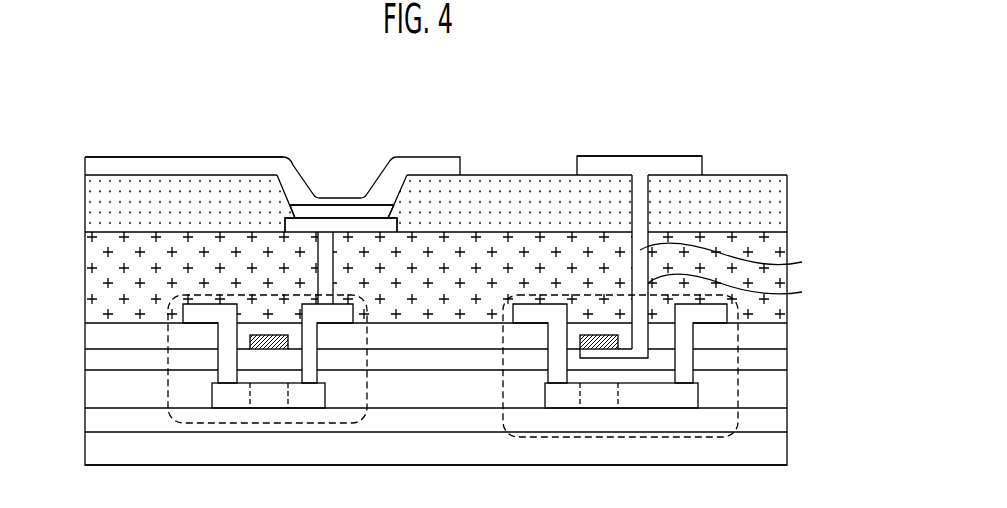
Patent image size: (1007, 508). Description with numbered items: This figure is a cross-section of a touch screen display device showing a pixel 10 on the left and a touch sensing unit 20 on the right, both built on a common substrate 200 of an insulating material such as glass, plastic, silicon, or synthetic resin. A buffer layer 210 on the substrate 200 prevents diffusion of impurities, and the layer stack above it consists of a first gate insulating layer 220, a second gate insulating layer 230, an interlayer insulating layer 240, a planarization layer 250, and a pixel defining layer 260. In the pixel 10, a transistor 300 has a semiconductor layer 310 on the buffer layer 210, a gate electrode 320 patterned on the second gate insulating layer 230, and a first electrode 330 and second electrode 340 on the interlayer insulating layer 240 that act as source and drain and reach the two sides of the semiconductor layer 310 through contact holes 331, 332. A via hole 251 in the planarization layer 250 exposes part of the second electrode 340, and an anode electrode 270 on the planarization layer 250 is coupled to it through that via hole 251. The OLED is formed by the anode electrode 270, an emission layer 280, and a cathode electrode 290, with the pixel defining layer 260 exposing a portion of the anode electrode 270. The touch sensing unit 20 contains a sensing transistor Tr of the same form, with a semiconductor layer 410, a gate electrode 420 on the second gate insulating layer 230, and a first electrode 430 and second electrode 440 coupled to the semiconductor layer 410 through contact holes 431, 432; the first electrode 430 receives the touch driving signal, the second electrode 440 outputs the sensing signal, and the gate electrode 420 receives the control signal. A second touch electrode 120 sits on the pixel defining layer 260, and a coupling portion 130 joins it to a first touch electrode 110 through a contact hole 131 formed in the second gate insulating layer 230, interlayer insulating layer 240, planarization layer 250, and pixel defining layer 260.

The pixel 10 is at (272, 155).
The touch sensing unit 20 is at (633, 149).
The first touch electrode 110 is at (619, 362).
The second touch electrode 120 is at (672, 158).
The coupling portion 130 is at (736, 260).
The contact hole 131 is at (740, 290).
The substrate 200 is at (85, 443).
The buffer layer 210 is at (85, 416).
The first gate insulating layer 220 is at (85, 388).
The second gate insulating layer 230 is at (85, 358).
The interlayer insulating layer 240 is at (85, 335).
The planarization layer 250 is at (85, 276).
The via hole 251 is at (334, 268).
The pixel defining layer 260 is at (85, 203).
The anode electrode 270 is at (352, 224).
The emission layer 280 is at (317, 213).
The cathode electrode 290 is at (297, 167).
The transistor 300 is at (196, 422).
The semiconductor layer 310 is at (273, 400).
The gate electrode 320 is at (262, 349).
The first electrode 330 is at (203, 313).
The contact hole 331 is at (216, 358).
The contact hole 332 is at (319, 358).
The second electrode 340 is at (333, 315).
The sensing transistor Tr is at (525, 437).
The semiconductor layer 410 is at (603, 398).
The gate electrode 420 is at (592, 349).
The first electrode 430 is at (535, 313).
The contact hole 431 is at (547, 358).
The contact hole 432 is at (695, 358).
The second electrode 440 is at (711, 313).